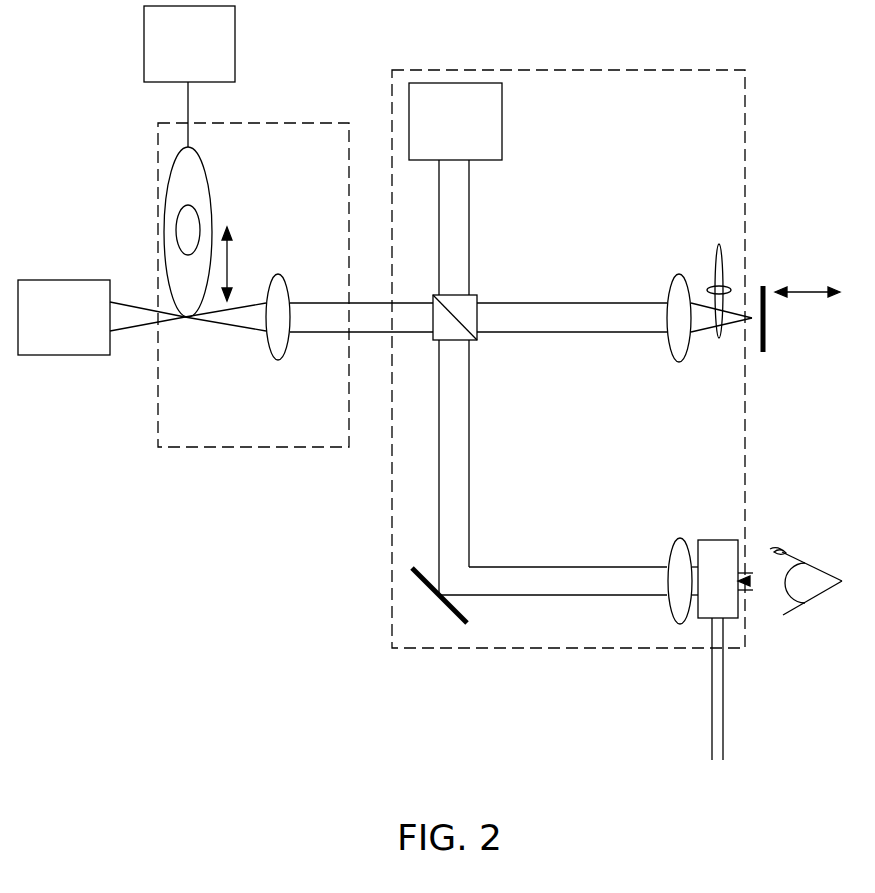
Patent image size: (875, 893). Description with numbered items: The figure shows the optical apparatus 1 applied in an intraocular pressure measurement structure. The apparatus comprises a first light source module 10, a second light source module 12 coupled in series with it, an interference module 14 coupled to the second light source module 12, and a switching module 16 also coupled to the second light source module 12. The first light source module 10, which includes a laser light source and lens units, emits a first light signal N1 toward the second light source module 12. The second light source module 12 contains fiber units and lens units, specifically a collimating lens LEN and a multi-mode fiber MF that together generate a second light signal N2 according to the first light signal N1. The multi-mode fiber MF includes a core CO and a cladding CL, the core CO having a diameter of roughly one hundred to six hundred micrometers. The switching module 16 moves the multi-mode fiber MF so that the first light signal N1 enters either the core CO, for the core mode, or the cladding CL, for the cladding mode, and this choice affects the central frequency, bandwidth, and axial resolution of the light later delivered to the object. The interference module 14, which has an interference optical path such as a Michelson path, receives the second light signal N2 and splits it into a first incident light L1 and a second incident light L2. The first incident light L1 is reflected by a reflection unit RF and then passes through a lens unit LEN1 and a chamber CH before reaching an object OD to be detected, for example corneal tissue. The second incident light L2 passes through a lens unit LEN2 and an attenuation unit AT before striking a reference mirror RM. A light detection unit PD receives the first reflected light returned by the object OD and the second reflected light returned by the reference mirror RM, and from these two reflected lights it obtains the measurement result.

The optical apparatus 1 is at (88, 70).
The first light source module 10 is at (75, 331).
The second light source module 12 is at (318, 165).
The interference module 14 is at (684, 137).
The switching module 16 is at (202, 57).
The first light signal N1 is at (147, 301).
The second light signal N2 is at (361, 302).
The cladding CL is at (181, 178).
The core CO is at (184, 223).
The multi-mode fiber MF is at (210, 181).
The collimating lens LEN is at (286, 346).
The light detection unit PD is at (469, 135).
The first incident light L1 is at (553, 564).
The second incident light L2 is at (572, 302).
The lens unit LEN1 is at (668, 550).
The lens unit LEN2 is at (668, 286).
The attenuation unit AT is at (719, 279).
The reference mirror RM is at (767, 335).
The reflection unit RF is at (447, 612).
The chamber CH is at (717, 540).
The object to be detected OD is at (816, 564).